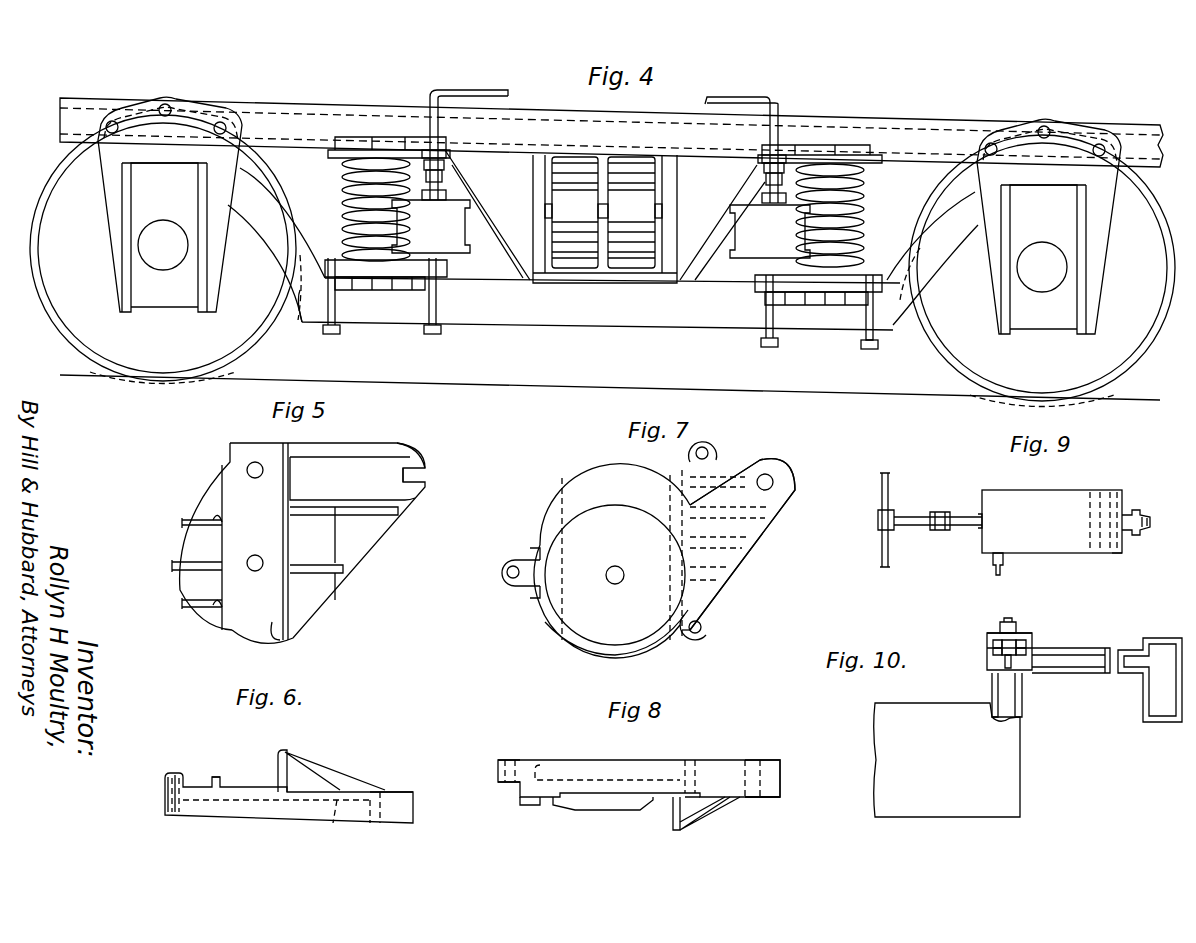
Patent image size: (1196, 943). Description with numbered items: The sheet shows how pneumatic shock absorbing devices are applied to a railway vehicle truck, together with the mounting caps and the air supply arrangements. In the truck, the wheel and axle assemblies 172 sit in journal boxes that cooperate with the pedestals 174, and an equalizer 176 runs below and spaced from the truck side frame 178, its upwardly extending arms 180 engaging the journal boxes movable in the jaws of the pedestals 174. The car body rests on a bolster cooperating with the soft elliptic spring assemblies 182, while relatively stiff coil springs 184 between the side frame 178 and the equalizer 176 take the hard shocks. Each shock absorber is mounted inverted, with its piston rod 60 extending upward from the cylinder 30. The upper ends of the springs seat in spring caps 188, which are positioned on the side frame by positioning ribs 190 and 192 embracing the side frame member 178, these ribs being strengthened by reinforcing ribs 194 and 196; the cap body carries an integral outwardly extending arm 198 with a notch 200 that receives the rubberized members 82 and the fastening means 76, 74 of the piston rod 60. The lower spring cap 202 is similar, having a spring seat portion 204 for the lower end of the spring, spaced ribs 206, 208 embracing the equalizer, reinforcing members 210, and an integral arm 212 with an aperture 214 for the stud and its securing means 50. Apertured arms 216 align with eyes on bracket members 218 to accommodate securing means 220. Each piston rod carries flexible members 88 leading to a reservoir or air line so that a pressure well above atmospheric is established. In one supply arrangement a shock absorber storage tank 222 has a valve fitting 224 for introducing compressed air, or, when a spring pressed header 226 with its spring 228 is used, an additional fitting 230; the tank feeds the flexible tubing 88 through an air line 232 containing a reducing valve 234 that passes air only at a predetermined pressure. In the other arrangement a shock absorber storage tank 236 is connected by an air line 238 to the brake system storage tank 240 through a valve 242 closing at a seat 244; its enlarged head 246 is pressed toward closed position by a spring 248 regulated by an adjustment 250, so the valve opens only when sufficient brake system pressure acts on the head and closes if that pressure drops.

In FIG. 4, the cylinder 30 is at (470, 218).
In FIG. 4, the securing means 50 is at (436, 284).
In FIG. 4, the piston rod 60 is at (446, 185).
In FIG. 4, the fastening means 74 is at (604, 172).
In FIG. 4, the fastening means 76 is at (428, 140).
In FIG. 4, the rubberized members 82 is at (444, 160).
In FIG. 4, the flexible members 88 is at (472, 90).
In FIG. 9, the flexible members 88 is at (880, 492).
In FIG. 4, the wheel and axle assemblies 172 is at (248, 338).
In FIG. 4, the pedestals 174 is at (1042, 262).
In FIG. 4, the equalizer 176 is at (627, 318).
In FIG. 4, the truck side frame 178 is at (918, 118).
In FIG. 4, the upwardly extending arms 180 is at (935, 268).
In FIG. 4, the soft elliptic spring assemblies 182 is at (625, 178).
In FIG. 4, the coil springs 184 is at (211, 209).
In FIG. 6, the coil springs 184 is at (338, 823).
In FIG. 4, the spring caps 188 is at (370, 137).
In FIG. 5, the spring caps 188 is at (318, 598).
In FIG. 5, the positioning rib 190 is at (215, 620).
In FIG. 6, the positioning rib 190 is at (215, 775).
In FIG. 5, the positioning rib 192 is at (301, 639).
In FIG. 6, the positioning rib 192 is at (331, 762).
In FIG. 5, the reinforcing rib 194 is at (195, 565).
In FIG. 6, the reinforcing rib 194 is at (163, 780).
In FIG. 5, the reinforcing rib 196 is at (360, 553).
In FIG. 6, the reinforcing rib 196 is at (391, 774).
In FIG. 5, the outwardly extending arm 198 is at (358, 468).
In FIG. 5, the notch 200 is at (434, 464).
In FIG. 4, the lower spring cap 202 is at (447, 268).
In FIG. 7, the spring seat portion 204 is at (578, 630).
In FIG. 8, the spring seat portion 204 is at (548, 768).
In FIG. 7, the rib 206 is at (530, 600).
In FIG. 8, the rib 206 is at (540, 805).
In FIG. 7, the rib 208 is at (683, 640).
In FIG. 8, the rib 208 is at (673, 820).
In FIG. 7, the reinforcing members 210 is at (735, 562).
In FIG. 8, the reinforcing members 210 is at (715, 805).
In FIG. 7, the integral arm 212 is at (770, 510).
In FIG. 8, the integral arm 212 is at (780, 787).
In FIG. 7, the aperture 214 is at (768, 474).
In FIG. 7, the apertured arms 216 is at (714, 453).
In FIG. 8, the apertured arms 216 is at (498, 770).
In FIG. 4, the bracket members 218 is at (342, 328).
In FIG. 4, the securing means 220 is at (432, 306).
In FIG. 9, the shock absorber storage tank 222 is at (1010, 490).
In FIG. 9, the valve fitting 224 is at (1143, 511).
In FIG. 9, the header 226 is at (1088, 511).
In FIG. 9, the spring 228 is at (1112, 553).
In FIG. 9, the fitting 230 is at (1005, 562).
In FIG. 9, the air line 232 is at (916, 515).
In FIG. 9, the reducing valve 234 is at (940, 532).
In FIG. 10, the shock absorber storage tank 236 is at (1008, 758).
In FIG. 10, the air line 238 is at (1084, 672).
In FIG. 10, the storage tank 240 is at (1158, 720).
In FIG. 10, the valve 242 is at (985, 645).
In FIG. 10, the seat 244 is at (990, 674).
In FIG. 10, the enlarged head 246 is at (987, 635).
In FIG. 10, the spring 248 is at (1032, 636).
In FIG. 10, the adjustment 250 is at (1009, 618).